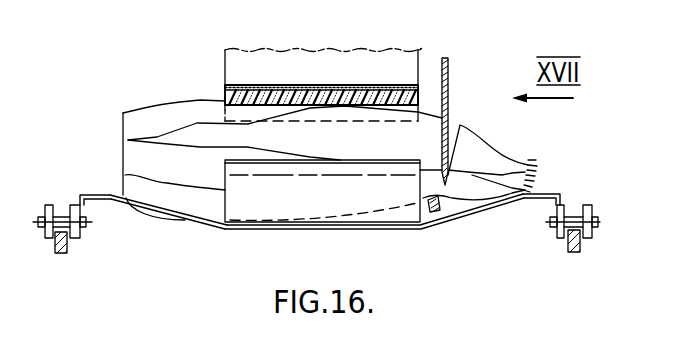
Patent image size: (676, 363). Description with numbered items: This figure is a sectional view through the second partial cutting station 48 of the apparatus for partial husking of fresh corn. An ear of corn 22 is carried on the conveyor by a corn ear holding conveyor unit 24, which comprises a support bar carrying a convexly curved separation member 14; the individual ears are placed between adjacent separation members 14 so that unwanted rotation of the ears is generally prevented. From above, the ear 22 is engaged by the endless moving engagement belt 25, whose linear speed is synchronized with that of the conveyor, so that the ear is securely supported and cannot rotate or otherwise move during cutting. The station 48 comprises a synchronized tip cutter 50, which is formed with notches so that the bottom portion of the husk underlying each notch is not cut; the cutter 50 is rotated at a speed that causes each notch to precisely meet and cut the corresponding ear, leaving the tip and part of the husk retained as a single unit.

The separation member 14 is at (258, 200).
The ear of corn 22 is at (148, 127).
The corn ear holding conveyor unit 24 is at (407, 228).
The engagement belt 25 is at (235, 70).
The second partial cutting station 48 is at (364, 42).
The synchronized tip cutter 50 is at (450, 82).